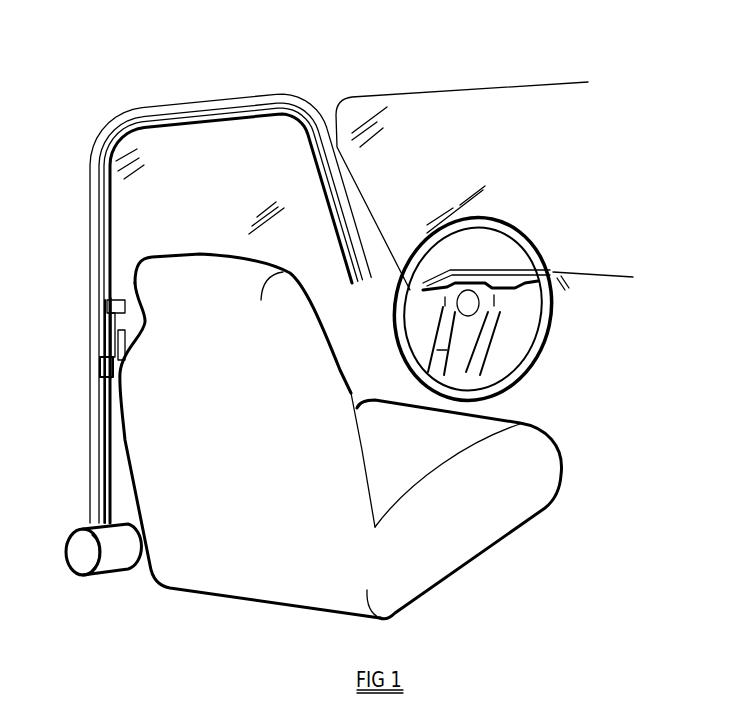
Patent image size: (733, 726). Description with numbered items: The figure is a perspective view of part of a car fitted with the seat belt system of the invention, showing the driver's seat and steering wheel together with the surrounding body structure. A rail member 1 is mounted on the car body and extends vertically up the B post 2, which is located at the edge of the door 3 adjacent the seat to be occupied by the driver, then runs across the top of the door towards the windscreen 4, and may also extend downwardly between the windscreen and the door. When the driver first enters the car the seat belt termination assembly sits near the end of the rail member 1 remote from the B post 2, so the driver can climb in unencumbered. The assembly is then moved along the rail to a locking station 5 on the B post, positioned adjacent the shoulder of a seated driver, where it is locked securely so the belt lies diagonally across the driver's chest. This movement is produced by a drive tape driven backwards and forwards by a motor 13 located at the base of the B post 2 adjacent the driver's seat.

The rail member 1 is at (300, 115).
The B post 2 is at (73, 261).
The door 3 is at (252, 138).
The windscreen 4 is at (484, 186).
The locking station 5 is at (105, 343).
The motor 13 is at (73, 555).